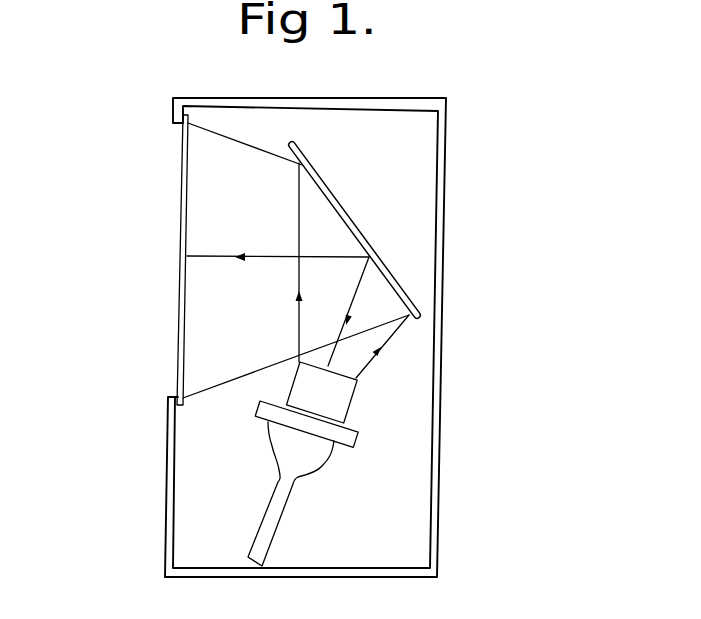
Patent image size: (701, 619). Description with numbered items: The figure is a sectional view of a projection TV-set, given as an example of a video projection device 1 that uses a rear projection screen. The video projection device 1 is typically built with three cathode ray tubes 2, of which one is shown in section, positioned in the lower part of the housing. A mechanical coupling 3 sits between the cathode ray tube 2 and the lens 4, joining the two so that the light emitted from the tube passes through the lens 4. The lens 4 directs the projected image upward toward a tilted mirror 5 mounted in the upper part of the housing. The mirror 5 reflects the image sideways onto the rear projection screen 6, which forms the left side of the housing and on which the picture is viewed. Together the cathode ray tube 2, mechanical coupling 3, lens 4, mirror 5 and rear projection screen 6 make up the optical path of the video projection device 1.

The video projection device 1 is at (445, 198).
The cathode ray tube 2 is at (298, 450).
The mechanical coupling 3 is at (355, 440).
The lens 4 is at (333, 400).
The mirror 5 is at (400, 235).
The rear projection screen 6 is at (182, 202).